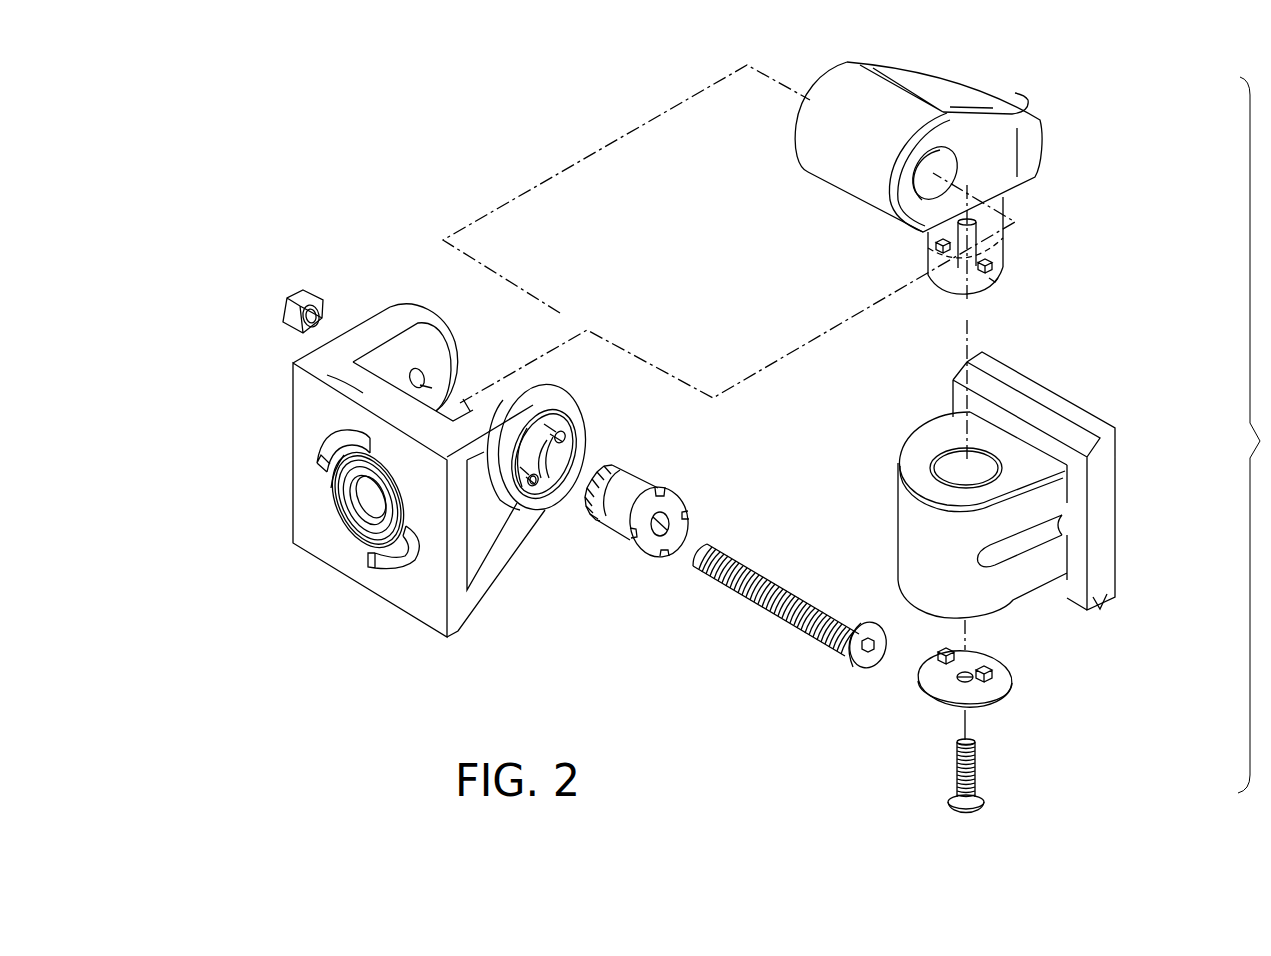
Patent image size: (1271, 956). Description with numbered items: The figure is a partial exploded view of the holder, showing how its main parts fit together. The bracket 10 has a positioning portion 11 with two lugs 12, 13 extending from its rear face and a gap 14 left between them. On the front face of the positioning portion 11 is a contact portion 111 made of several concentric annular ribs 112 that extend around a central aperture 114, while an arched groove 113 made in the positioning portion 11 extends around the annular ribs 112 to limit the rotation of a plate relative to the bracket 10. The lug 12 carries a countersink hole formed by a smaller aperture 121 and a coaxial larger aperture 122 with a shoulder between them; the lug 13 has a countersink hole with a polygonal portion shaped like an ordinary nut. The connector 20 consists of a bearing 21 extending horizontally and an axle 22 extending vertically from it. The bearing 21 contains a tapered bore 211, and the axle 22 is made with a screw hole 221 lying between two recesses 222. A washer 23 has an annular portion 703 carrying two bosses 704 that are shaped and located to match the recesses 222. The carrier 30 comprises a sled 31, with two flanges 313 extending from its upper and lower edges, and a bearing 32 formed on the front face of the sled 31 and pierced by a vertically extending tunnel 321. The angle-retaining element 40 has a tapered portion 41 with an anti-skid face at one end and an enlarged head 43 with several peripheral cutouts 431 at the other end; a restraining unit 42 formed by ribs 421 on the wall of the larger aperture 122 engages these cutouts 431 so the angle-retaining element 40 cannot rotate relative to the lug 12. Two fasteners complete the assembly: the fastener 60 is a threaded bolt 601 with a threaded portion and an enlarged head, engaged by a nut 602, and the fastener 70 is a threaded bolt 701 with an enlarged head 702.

The bracket 10 is at (285, 451).
The positioning portion 11 is at (305, 384).
The contact portion 111 is at (346, 535).
The annular ribs 112 is at (367, 500).
The arched groove 113 is at (397, 562).
The central aperture 114 is at (365, 503).
The lug 12 is at (540, 395).
The smaller aperture 121 is at (548, 460).
The larger aperture 122 is at (548, 455).
The lug 13 is at (405, 306).
The gap 14 is at (466, 357).
The connector 20 is at (1044, 138).
The bearing 21 is at (810, 138).
The tapered bore 211 is at (930, 175).
The axle 22 is at (993, 245).
The screw hole 221 is at (930, 248).
The recesses 222 is at (993, 282).
The washer 23 is at (1004, 688).
The carrier 30 is at (1122, 471).
The sled 31 is at (1107, 513).
The flanges 313 is at (1047, 400).
The bearing 32 is at (908, 527).
The tunnel 321 is at (948, 463).
The angle-retaining element 40 is at (618, 518).
The tapered portion 41 is at (618, 466).
The restraining unit 42 is at (572, 430).
The ribs 421 is at (530, 480).
The enlarged head 43 is at (670, 548).
The cutouts 431 is at (662, 488).
The fastener 60 is at (775, 615).
The threaded bolt 601 is at (806, 596).
The nut 602 is at (290, 308).
The fastener 70 is at (984, 770).
The threaded bolt 701 is at (957, 780).
The enlarged head 702 is at (978, 800).
The annular portion 703 is at (922, 686).
The bosses 704 is at (987, 676).